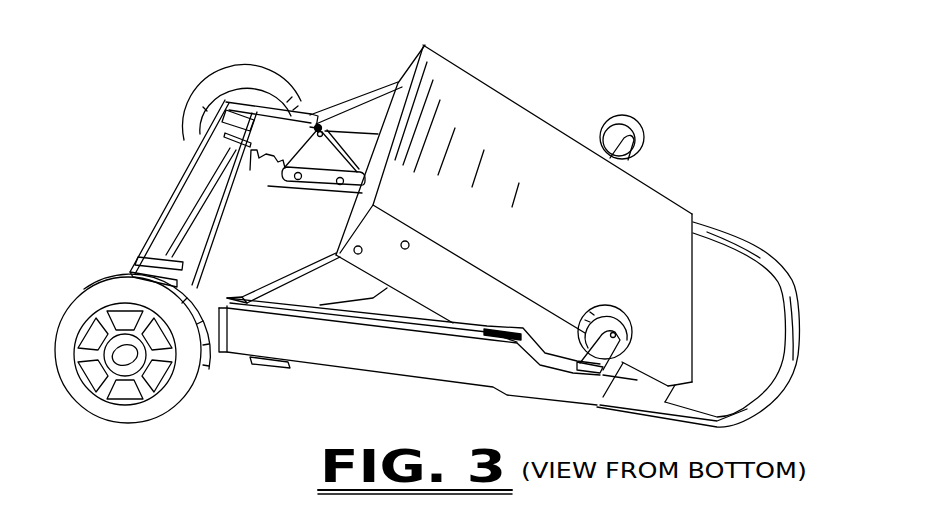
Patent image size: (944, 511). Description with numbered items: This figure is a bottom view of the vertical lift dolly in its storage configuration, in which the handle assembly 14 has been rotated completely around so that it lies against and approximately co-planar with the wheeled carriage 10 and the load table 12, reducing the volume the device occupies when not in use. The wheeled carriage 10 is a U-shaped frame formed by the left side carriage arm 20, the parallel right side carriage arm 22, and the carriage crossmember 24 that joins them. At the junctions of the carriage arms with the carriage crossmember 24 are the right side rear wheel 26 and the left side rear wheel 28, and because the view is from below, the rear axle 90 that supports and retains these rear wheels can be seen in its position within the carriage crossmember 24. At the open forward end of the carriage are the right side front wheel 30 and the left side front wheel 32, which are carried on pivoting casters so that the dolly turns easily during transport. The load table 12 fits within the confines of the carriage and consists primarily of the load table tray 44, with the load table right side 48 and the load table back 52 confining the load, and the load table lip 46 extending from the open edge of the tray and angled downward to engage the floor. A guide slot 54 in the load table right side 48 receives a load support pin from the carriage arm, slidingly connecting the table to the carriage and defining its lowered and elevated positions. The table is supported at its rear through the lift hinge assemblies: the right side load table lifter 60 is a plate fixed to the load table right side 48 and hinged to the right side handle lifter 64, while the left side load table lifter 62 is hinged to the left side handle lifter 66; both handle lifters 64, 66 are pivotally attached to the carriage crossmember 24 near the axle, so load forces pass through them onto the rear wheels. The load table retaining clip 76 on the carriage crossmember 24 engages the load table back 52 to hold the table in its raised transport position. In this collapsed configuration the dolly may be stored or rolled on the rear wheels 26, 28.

The wheeled carriage 10 is at (325, 374).
The load table 12 is at (632, 206).
The handle assembly 14 is at (780, 407).
The left side carriage arm 20 is at (316, 122).
The right side carriage arm 22 is at (439, 362).
The carriage crossmember 24 is at (165, 240).
The right side rear wheel 26 is at (95, 293).
The left side rear wheel 28 is at (194, 90).
The right side front wheel 30 is at (618, 305).
The left side front wheel 32 is at (621, 116).
The load table tray 44 is at (577, 244).
The load table lip 46 is at (686, 287).
The load table right side 48 is at (462, 294).
The load table back 52 is at (403, 81).
The guide slot 54 is at (623, 360).
The right side load table lifter 60 is at (293, 287).
The left side load table lifter 62 is at (360, 116).
The right side handle lifter 64 is at (270, 366).
The left side handle lifter 66 is at (259, 178).
The load table retaining clip 76 is at (273, 165).
The rear axle 90 is at (200, 203).